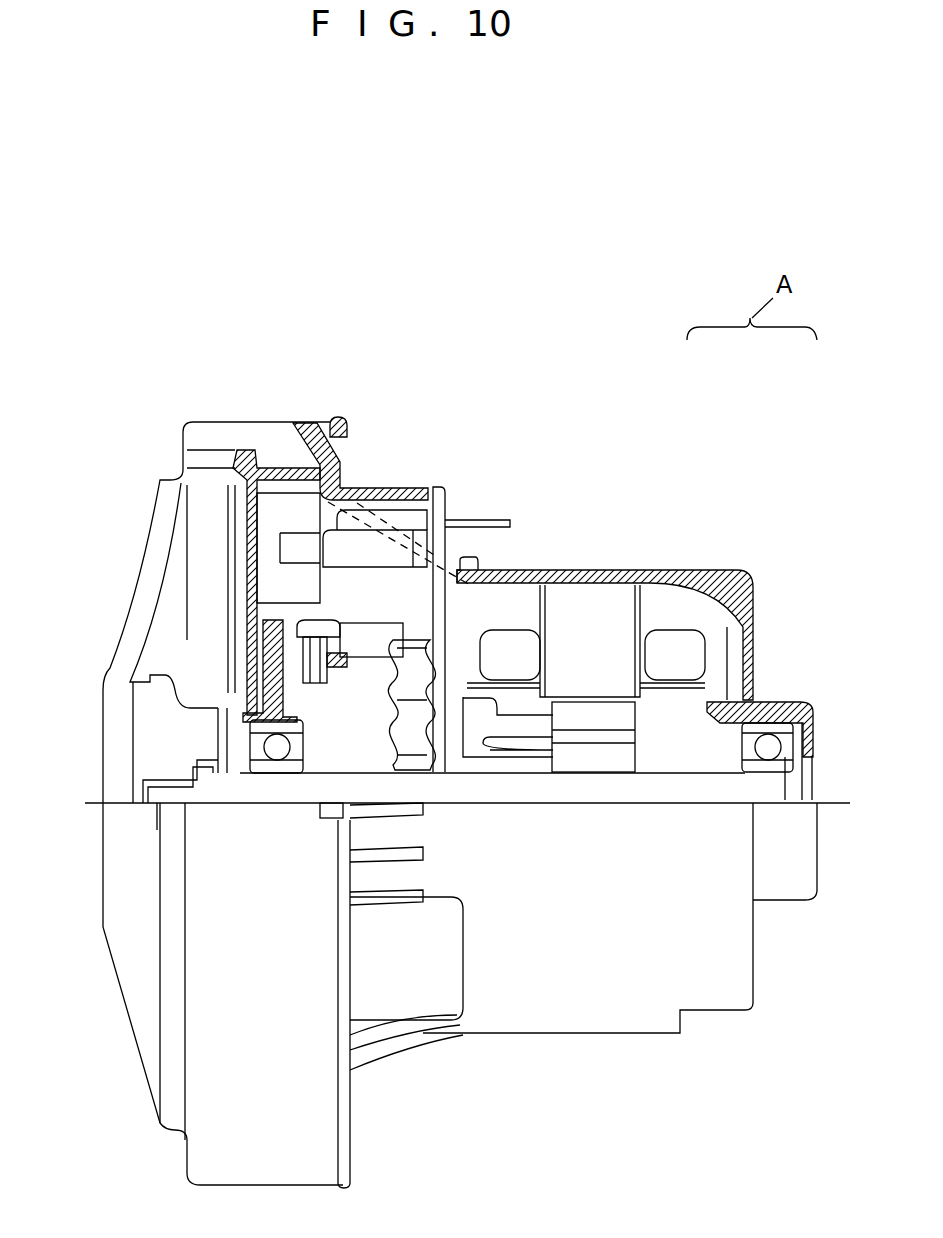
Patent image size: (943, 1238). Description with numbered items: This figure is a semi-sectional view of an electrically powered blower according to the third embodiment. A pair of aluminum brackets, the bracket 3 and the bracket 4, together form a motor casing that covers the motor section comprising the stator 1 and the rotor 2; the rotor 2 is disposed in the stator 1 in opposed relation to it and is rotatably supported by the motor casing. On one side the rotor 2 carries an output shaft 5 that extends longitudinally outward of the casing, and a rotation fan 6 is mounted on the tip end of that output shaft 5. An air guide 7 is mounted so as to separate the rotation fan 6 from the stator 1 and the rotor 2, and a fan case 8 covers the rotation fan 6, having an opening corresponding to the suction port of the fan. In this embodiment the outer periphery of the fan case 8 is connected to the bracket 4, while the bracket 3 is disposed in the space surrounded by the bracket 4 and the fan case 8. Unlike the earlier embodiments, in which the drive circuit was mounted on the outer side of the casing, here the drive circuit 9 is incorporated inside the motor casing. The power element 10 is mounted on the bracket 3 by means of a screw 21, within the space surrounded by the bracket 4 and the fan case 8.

The stator 1 is at (603, 640).
The rotor 2 is at (603, 717).
The first bracket 3 is at (265, 712).
The second bracket 4 is at (590, 570).
The output shaft 5 is at (703, 783).
The rotation fan 6 is at (200, 565).
The air guide 7 is at (247, 460).
The fan case 8 is at (245, 420).
The drive circuit 9 is at (443, 600).
The power element 10 is at (365, 625).
The screw 21 is at (343, 417).